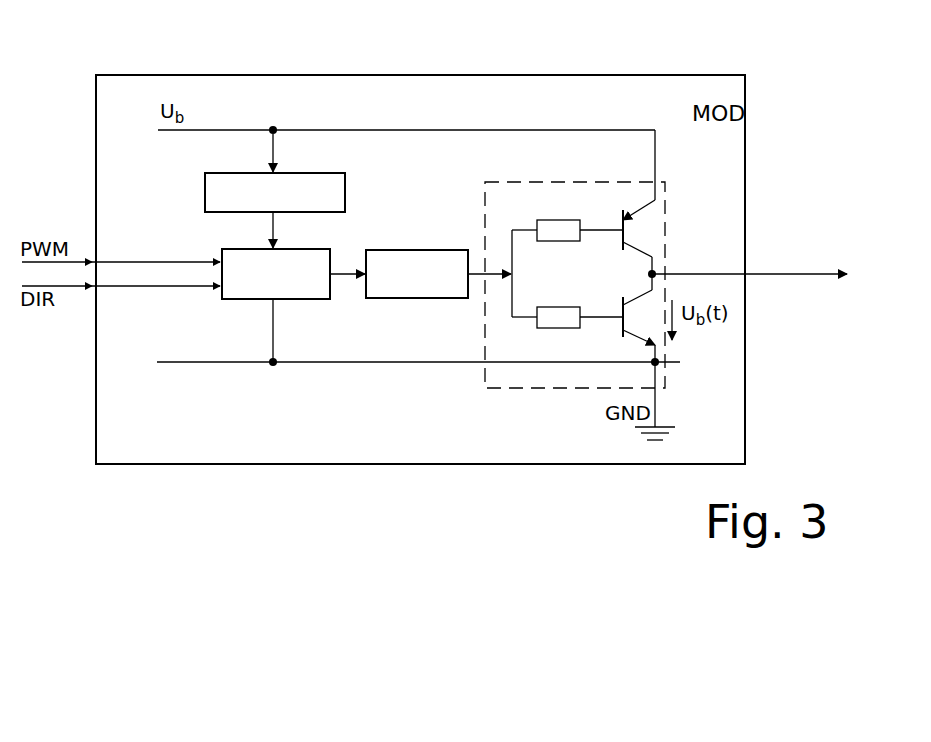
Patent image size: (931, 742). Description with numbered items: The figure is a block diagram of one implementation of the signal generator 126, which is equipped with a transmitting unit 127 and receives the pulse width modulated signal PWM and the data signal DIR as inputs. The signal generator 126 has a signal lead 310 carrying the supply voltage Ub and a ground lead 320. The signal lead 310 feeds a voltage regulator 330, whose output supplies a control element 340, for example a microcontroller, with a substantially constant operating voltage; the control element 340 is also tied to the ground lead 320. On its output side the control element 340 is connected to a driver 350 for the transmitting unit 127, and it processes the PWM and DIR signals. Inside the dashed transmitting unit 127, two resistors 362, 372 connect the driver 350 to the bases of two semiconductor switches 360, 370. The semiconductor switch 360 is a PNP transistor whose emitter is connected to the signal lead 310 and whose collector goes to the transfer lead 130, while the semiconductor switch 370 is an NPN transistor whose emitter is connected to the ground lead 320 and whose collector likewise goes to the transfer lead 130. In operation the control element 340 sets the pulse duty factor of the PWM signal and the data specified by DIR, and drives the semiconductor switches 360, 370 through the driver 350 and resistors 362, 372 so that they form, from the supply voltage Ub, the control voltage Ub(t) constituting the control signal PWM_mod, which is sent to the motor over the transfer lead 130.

The signal generator 126 is at (653, 73).
The transmitting unit 127 is at (560, 388).
The transfer lead 130 is at (770, 278).
The signal lead 310 is at (545, 130).
The ground lead 320 is at (400, 362).
The voltage regulator 330 is at (205, 192).
The control element 340 is at (240, 300).
The driver 350 is at (378, 250).
The semiconductor switch 360 is at (646, 228).
The resistor 362 is at (545, 220).
The semiconductor switch 370 is at (622, 342).
The resistor 372 is at (545, 307).